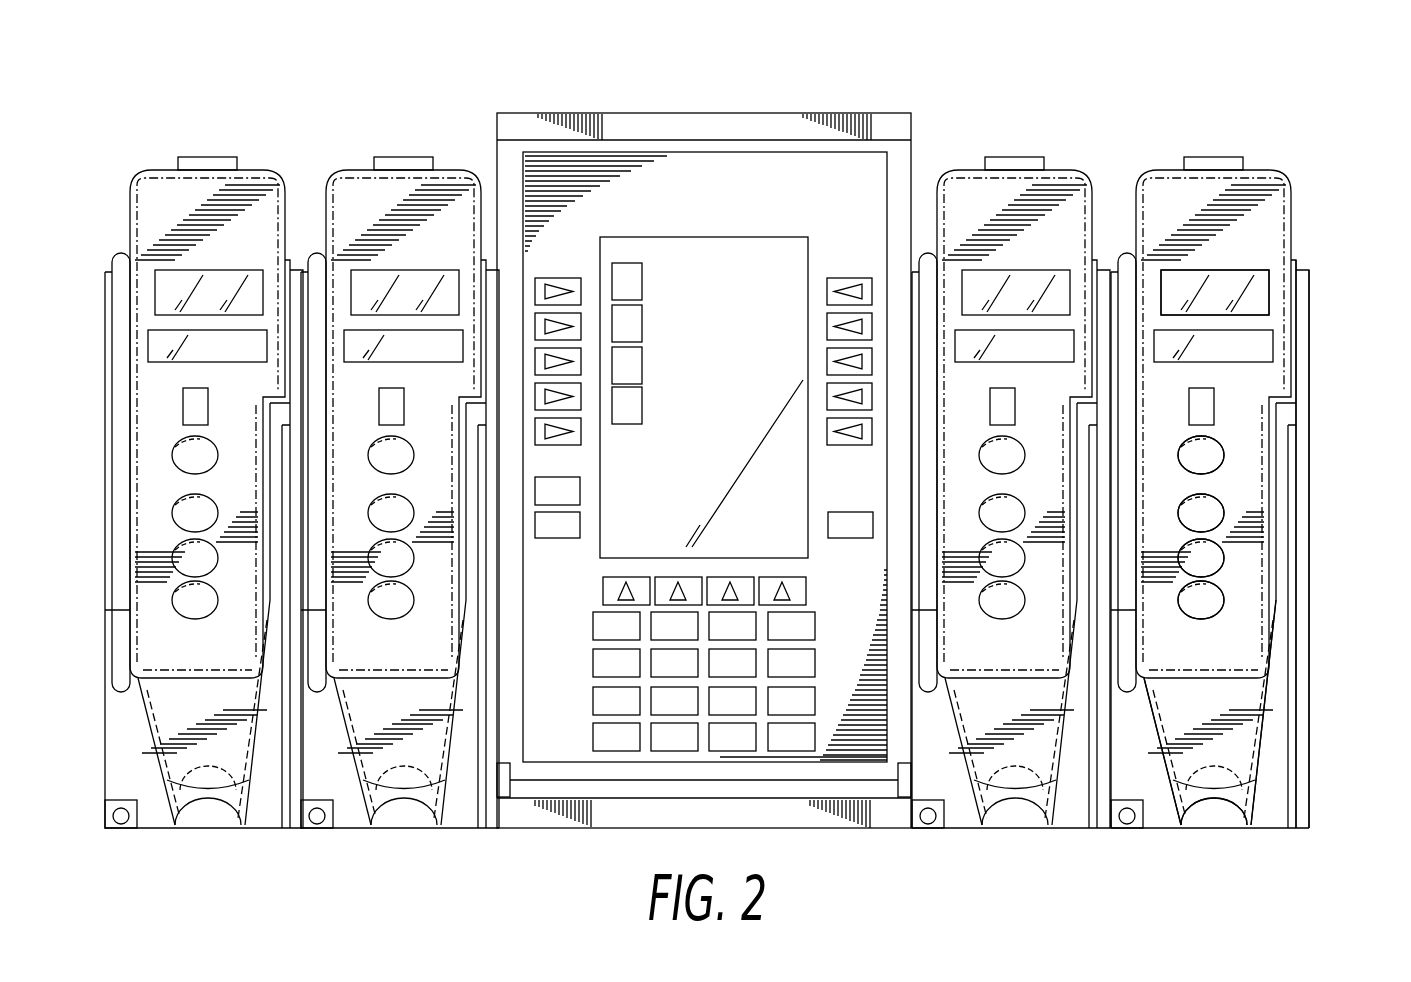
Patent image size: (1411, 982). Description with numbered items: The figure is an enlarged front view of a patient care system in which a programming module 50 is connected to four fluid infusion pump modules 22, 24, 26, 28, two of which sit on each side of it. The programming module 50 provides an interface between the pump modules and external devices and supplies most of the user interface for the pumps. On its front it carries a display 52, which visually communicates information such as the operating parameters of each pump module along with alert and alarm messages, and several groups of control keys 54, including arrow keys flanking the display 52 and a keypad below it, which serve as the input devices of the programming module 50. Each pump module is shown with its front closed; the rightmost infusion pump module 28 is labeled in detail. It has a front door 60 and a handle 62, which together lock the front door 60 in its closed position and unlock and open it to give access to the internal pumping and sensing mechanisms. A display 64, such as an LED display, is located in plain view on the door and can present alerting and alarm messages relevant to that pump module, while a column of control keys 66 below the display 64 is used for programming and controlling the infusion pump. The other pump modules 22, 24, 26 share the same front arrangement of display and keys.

The infusion pump module 22 is at (155, 170).
The infusion pump module 24 is at (352, 170).
The infusion pump module 26 is at (957, 170).
The infusion pump module 28 is at (1280, 170).
The programming module 50 is at (704, 112).
The display 52 is at (734, 237).
The control keys 54 is at (525, 445).
The front door 60 is at (1292, 728).
The handle 62 is at (1252, 752).
The display 64 is at (1269, 290).
The control keys 66 is at (1224, 453).